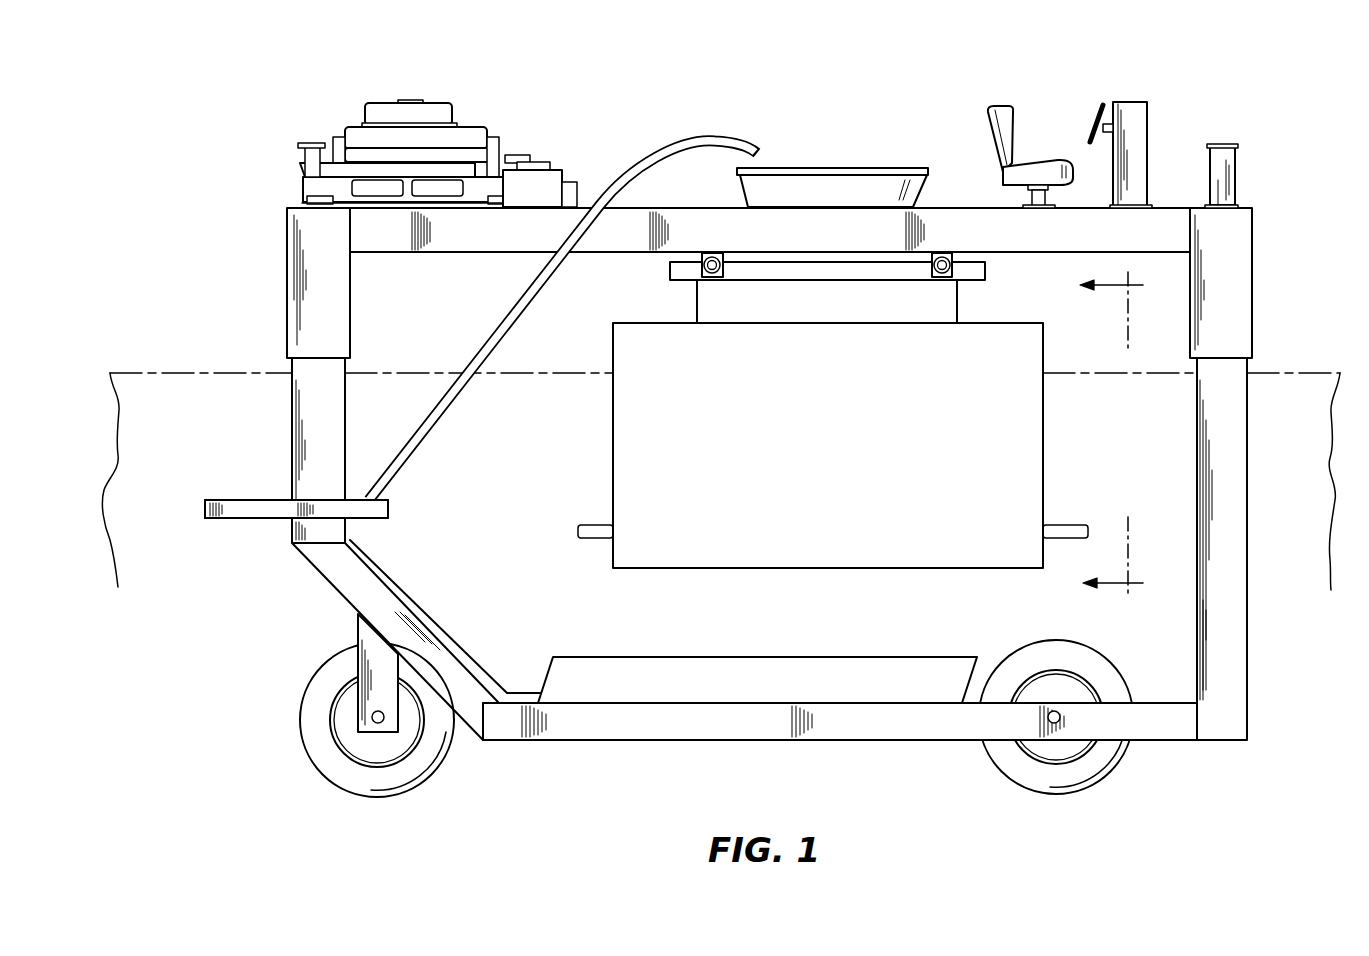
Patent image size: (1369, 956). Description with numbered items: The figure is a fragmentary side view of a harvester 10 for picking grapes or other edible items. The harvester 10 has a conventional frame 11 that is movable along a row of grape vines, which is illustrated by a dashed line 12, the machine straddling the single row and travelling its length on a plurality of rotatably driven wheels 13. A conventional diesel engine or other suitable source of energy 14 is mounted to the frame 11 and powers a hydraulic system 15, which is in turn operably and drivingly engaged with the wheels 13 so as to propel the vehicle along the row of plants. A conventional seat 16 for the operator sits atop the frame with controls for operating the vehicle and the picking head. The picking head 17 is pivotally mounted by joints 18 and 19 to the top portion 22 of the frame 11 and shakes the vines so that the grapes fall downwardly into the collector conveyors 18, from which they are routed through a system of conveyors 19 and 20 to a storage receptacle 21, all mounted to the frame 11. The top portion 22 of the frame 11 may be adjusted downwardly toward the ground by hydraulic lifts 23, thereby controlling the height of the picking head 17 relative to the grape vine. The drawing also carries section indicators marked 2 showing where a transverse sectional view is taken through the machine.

The harvester 10 is at (1297, 125).
The frame 11 is at (1232, 607).
The dashed line 12 is at (1280, 372).
The wheels 13 is at (412, 773).
The source of energy 14 is at (460, 135).
The hydraulic system 15 is at (543, 183).
The seat 16 is at (996, 128).
The picking head 17 is at (610, 447).
The joints 18 is at (723, 265).
The joints 19 is at (952, 262).
The conveyor 20 is at (500, 343).
The storage receptacle 21 is at (818, 165).
The top portion 22 is at (455, 240).
The hydraulic lifts 23 is at (303, 183).
The section line 2- 2 is at (1117, 435).